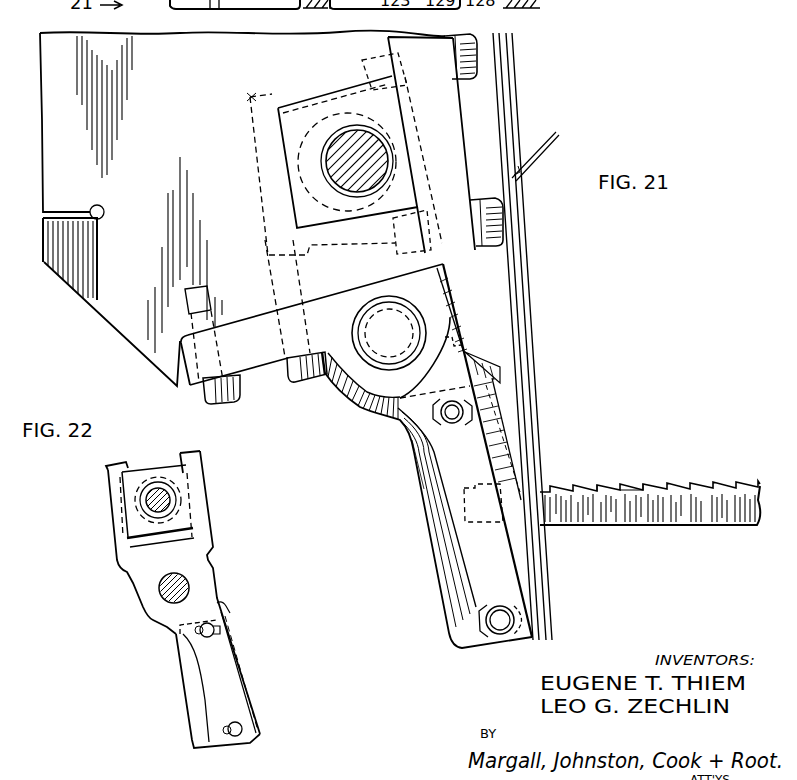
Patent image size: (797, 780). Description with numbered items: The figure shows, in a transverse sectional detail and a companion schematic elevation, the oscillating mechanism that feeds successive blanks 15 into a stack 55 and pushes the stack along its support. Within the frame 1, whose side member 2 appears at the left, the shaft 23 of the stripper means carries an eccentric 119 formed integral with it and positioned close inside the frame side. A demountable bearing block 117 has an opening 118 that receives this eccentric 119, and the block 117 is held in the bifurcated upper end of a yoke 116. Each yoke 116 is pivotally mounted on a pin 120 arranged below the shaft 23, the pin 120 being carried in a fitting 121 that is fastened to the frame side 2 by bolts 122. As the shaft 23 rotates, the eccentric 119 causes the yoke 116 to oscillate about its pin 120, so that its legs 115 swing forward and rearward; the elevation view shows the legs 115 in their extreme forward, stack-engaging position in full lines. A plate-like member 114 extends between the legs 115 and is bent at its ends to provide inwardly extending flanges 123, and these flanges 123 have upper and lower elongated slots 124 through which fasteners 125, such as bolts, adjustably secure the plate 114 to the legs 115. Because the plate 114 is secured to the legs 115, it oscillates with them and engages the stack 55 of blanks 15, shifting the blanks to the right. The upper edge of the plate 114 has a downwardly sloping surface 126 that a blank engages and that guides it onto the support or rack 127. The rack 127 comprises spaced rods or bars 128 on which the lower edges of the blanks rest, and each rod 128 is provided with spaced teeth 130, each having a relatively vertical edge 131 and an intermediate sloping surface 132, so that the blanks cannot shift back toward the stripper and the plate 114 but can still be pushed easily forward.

In FIG. 21, the frame 1 is at (36, 129).
In FIG. 21, the side member of the frame 2 is at (55, 232).
In FIG. 21, the blanks 15 is at (546, 139).
In FIG. 21, the shaft 23 is at (373, 152).
In FIG. 22, the shaft 23 is at (170, 496).
In FIG. 21, the stack of blanks 55 is at (531, 122).
In FIG. 21, the plate-like member 114 is at (505, 409).
In FIG. 22, the plate-like member 114 is at (243, 656).
In FIG. 21, the legs 115 is at (436, 458).
In FIG. 22, the legs 115 is at (225, 678).
In FIG. 21, the yokes 116 is at (250, 96).
In FIG. 22, the yokes 116 is at (181, 452).
In FIG. 21, the bearing block 117 is at (308, 115).
In FIG. 22, the bearing block 117 is at (138, 476).
In FIG. 21, the opening 118 is at (370, 132).
In FIG. 21, the eccentric 119 is at (298, 153).
In FIG. 22, the eccentric 119 is at (128, 517).
In FIG. 21, the pin 120 is at (384, 348).
In FIG. 22, the pin 120 is at (184, 582).
In FIG. 21, the fitting 121 is at (262, 352).
In FIG. 21, the bolts 122 is at (318, 380).
In FIG. 21, the flanges 123 is at (424, 490).
In FIG. 21, the elongated slots 124 is at (498, 432).
In FIG. 22, the elongated slots 124 is at (228, 603).
In FIG. 21, the fasteners 125 is at (456, 408).
In FIG. 22, the fasteners 125 is at (214, 630).
In FIG. 21, the downwardly sloping surface 126 is at (471, 362).
In FIG. 21, the support or rack 127 is at (704, 535).
In FIG. 21, the rods or bars 128 is at (634, 510).
In FIG. 21, the teeth 130 is at (628, 486).
In FIG. 21, the vertical edge 131 is at (601, 486).
In FIG. 21, the sloping surface 132 is at (648, 487).